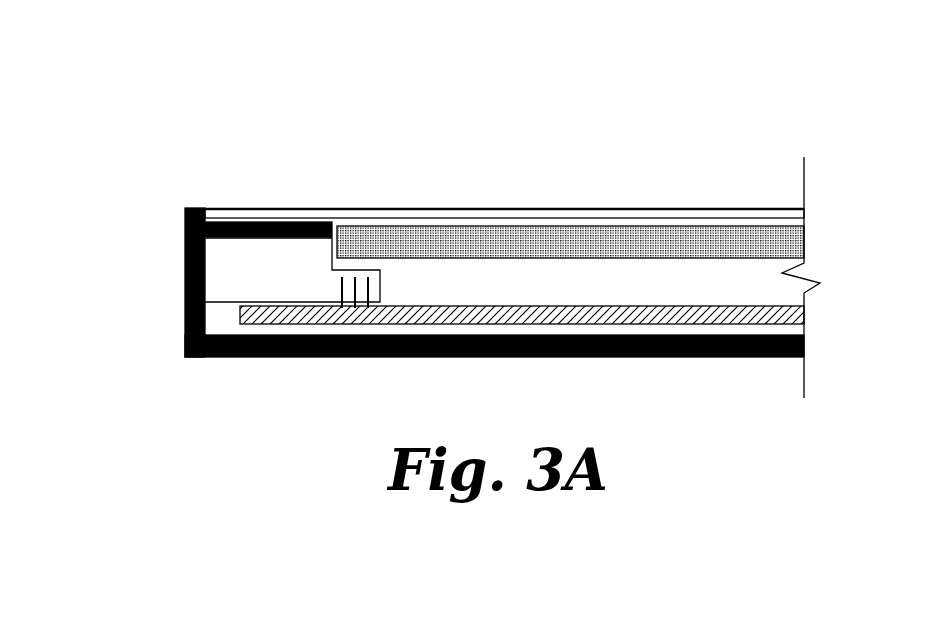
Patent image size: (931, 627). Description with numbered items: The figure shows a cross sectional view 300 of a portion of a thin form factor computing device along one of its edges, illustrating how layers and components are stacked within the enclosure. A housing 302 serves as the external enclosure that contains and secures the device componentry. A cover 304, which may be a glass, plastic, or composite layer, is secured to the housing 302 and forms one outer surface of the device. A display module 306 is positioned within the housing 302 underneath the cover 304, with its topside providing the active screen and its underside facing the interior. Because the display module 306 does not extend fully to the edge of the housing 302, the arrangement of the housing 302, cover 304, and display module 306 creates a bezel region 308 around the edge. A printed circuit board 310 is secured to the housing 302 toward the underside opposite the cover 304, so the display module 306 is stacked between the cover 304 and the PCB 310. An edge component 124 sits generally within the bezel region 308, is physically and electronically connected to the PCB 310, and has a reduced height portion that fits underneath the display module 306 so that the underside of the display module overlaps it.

The cross sectional view of a device 300 is at (138, 76).
The housing 302 is at (185, 280).
The cover 304 is at (642, 210).
The display module 306 is at (550, 245).
The bezel region 308 is at (234, 186).
The printed circuit board 310 is at (460, 305).
The edge component 124 is at (295, 282).